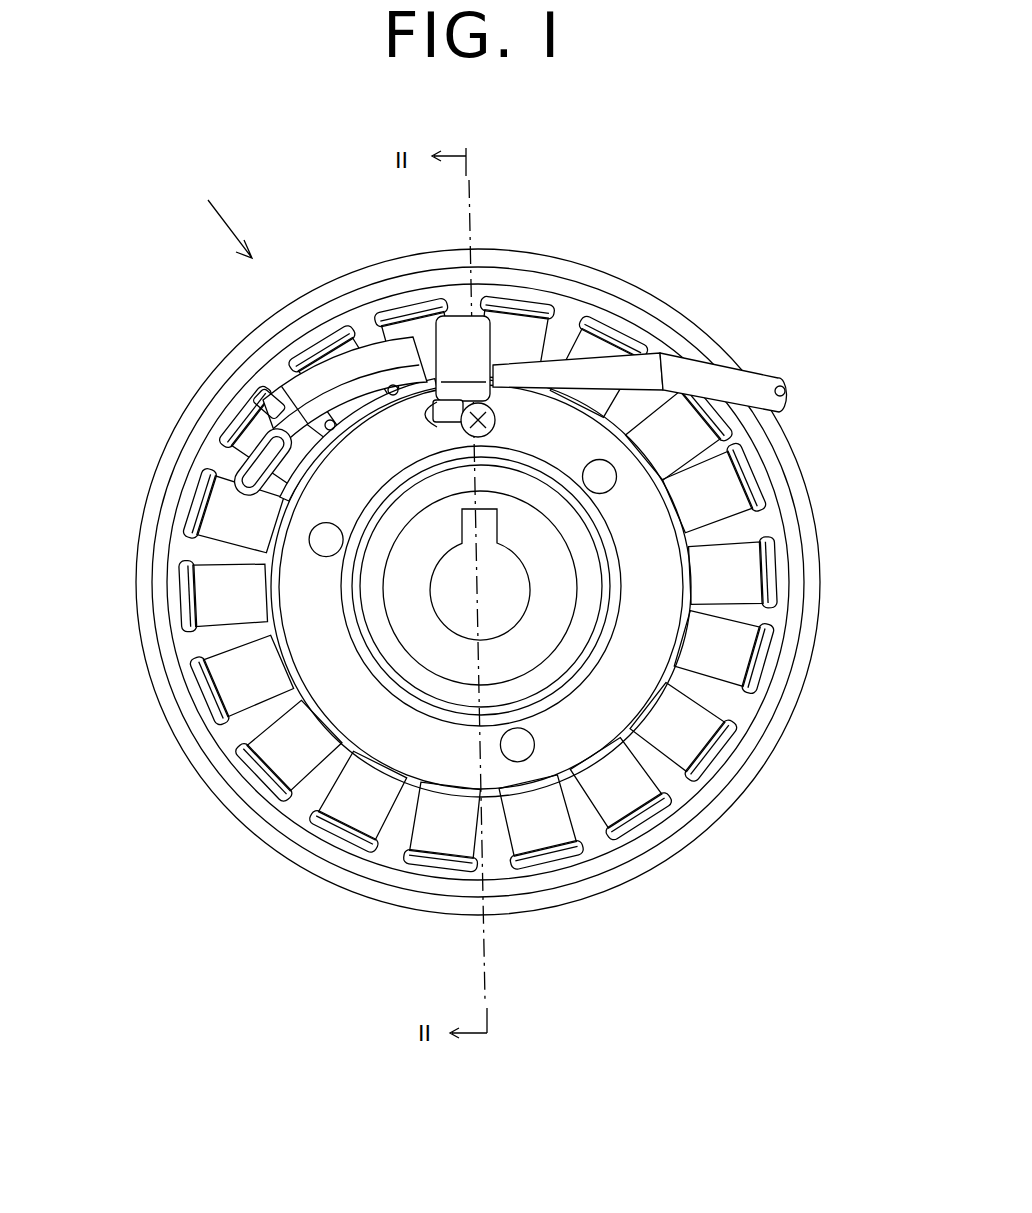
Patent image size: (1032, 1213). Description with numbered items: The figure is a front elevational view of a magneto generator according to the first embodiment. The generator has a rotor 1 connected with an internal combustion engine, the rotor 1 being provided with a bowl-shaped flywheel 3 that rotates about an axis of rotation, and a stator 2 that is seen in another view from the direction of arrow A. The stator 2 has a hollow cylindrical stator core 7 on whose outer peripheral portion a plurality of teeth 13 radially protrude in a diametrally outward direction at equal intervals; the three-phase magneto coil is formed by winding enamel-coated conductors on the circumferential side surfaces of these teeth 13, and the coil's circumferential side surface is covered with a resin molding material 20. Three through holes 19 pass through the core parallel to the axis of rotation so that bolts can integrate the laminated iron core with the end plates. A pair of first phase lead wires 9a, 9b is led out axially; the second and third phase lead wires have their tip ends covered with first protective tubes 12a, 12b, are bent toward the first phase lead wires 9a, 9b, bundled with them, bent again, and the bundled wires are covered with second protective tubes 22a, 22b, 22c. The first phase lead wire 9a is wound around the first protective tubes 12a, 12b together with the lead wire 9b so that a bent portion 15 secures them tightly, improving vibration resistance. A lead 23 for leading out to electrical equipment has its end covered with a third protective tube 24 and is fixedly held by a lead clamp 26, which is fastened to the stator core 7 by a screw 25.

The rotor 1 is at (777, 752).
The stator 2 is at (637, 540).
The flywheel 3 is at (818, 627).
The stator core 7 is at (610, 698).
The first phase lead wire 9a is at (300, 462).
The first phase lead wire 9b is at (250, 405).
The first protective tube 12a is at (270, 470).
The first protective tube 12b is at (273, 483).
The teeth 13 is at (517, 295).
The bent portion 15 is at (320, 432).
The through holes 19 is at (312, 542).
The resin molding material 20 is at (253, 683).
The second protective tube 22a is at (332, 388).
The second protective tube 22b is at (367, 373).
The second protective tube 22c is at (303, 390).
The lead 23 is at (703, 380).
The third protective tube 24 is at (613, 358).
The screw 25 is at (496, 430).
The lead clamp 26 is at (457, 333).
The arrow A is at (218, 220).